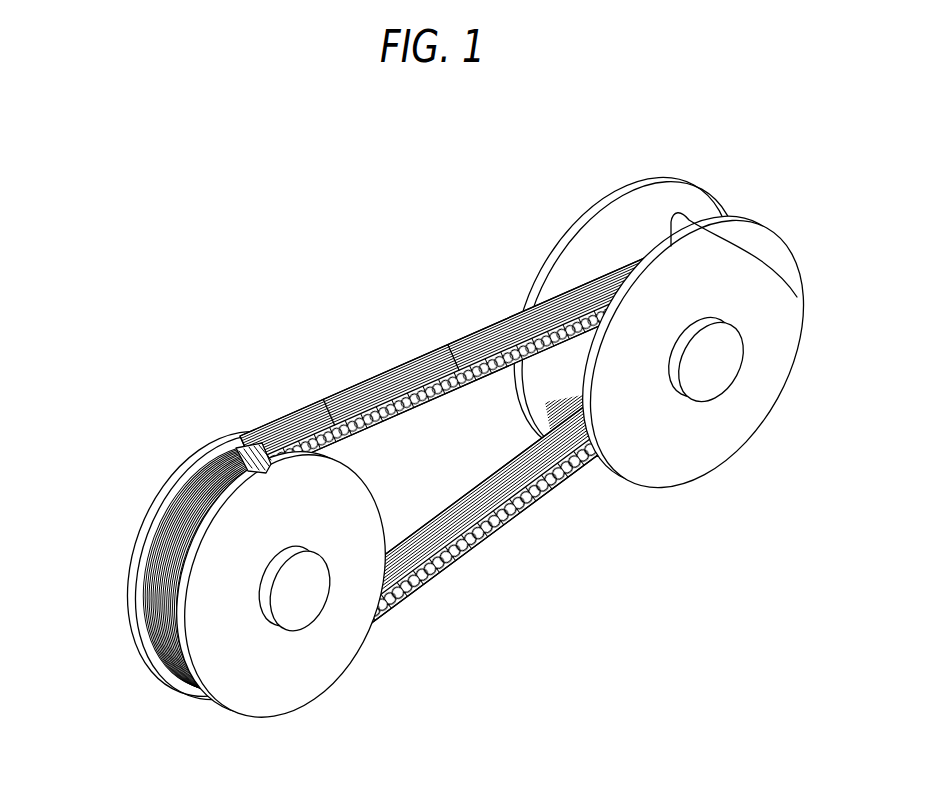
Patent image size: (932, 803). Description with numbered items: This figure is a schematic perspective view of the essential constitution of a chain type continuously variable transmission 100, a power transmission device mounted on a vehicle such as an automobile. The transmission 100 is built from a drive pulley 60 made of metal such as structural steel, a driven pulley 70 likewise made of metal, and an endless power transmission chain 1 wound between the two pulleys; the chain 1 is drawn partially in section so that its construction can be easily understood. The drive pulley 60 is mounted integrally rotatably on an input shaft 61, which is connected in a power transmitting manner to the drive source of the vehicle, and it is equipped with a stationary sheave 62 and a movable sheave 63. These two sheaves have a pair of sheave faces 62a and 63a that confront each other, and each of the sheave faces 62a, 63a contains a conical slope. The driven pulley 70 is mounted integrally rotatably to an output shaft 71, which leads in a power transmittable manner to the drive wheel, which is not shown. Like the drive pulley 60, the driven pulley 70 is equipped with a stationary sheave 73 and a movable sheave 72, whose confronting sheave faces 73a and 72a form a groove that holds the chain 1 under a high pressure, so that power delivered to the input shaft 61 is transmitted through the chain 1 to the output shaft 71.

The power transmission chain 1 is at (423, 356).
The continuously variable transmission 100 is at (692, 140).
The drive pulley 60 is at (237, 554).
The input shaft 61 is at (295, 615).
The stationary sheave 62 is at (170, 495).
The sheave face 62a is at (240, 442).
The movable sheave 63 is at (213, 539).
The sheave face 63a is at (171, 684).
The driven pulley 70 is at (691, 332).
The output shaft 71 is at (707, 383).
The movable sheave 72 is at (700, 165).
The sheave face 72a is at (603, 228).
The stationary sheave 73 is at (733, 224).
The sheave face 73a is at (797, 295).